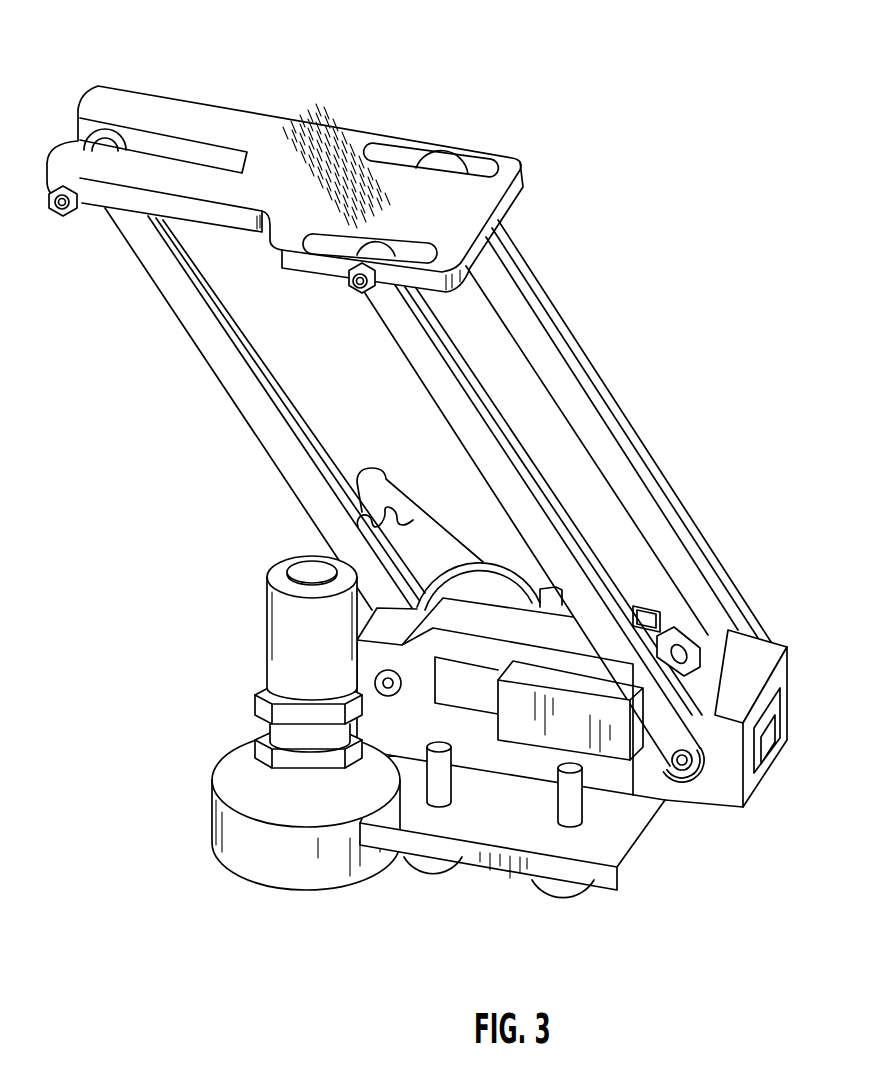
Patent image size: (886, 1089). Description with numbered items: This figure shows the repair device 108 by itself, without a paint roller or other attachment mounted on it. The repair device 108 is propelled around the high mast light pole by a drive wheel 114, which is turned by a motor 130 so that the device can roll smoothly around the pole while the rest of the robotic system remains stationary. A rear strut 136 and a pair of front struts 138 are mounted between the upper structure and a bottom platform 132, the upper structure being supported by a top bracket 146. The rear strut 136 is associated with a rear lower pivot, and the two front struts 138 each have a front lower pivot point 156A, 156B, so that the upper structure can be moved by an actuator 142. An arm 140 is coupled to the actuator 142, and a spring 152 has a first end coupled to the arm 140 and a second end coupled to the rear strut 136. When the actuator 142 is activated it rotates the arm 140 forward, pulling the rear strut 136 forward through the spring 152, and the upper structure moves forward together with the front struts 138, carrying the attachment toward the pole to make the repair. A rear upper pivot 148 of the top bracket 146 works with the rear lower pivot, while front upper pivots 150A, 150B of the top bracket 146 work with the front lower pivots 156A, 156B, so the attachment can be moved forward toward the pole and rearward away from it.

The repair device 108 is at (429, 479).
The drive wheel 114 is at (226, 823).
The motor 130 is at (290, 645).
The bottom platform 132 is at (407, 843).
The rear strut 136 is at (268, 430).
The front struts 138 is at (483, 397).
The arm 140 is at (396, 510).
The actuator 142 is at (523, 727).
The top bracket 146 is at (227, 120).
The rear upper pivot 148 is at (100, 134).
The front upper pivot 150A is at (437, 162).
The front upper pivot 150B is at (356, 280).
The spring 152 is at (372, 519).
The front lower pivot point 156A is at (763, 640).
The front lower pivot point 156B is at (684, 771).